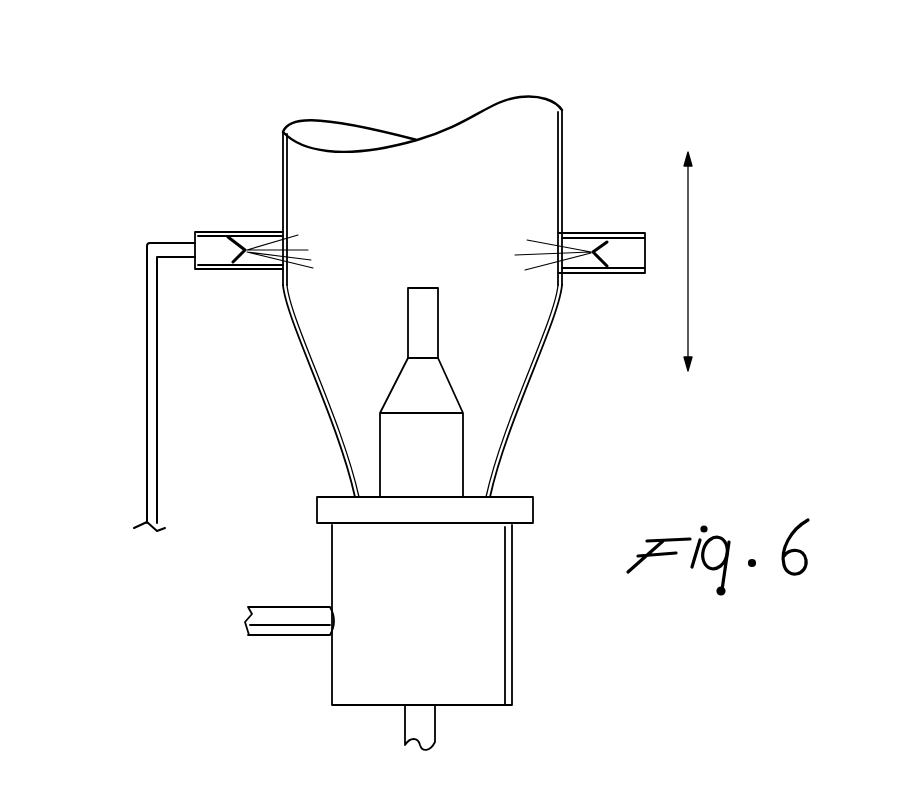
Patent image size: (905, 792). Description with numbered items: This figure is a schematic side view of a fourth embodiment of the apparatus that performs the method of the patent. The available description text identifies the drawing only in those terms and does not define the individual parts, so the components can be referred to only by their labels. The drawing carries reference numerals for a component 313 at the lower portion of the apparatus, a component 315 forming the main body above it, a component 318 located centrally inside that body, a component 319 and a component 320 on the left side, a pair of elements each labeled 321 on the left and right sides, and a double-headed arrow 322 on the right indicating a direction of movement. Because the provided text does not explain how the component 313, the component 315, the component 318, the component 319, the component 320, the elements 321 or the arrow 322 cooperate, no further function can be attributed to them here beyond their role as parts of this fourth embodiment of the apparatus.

The base housing 313 is at (473, 632).
The hopper / funnel 315 is at (592, 135).
The nozzle 318 is at (435, 400).
The side tube 319 is at (190, 226).
The bracket 320 is at (203, 258).
The spray nozzles 321 is at (248, 233).
The direction of motion arrow 322 is at (690, 205).